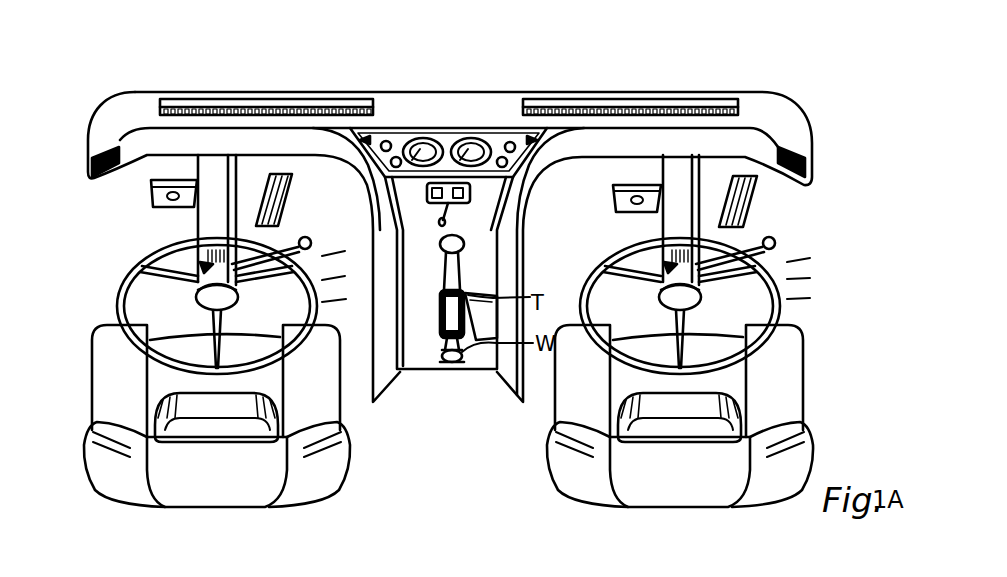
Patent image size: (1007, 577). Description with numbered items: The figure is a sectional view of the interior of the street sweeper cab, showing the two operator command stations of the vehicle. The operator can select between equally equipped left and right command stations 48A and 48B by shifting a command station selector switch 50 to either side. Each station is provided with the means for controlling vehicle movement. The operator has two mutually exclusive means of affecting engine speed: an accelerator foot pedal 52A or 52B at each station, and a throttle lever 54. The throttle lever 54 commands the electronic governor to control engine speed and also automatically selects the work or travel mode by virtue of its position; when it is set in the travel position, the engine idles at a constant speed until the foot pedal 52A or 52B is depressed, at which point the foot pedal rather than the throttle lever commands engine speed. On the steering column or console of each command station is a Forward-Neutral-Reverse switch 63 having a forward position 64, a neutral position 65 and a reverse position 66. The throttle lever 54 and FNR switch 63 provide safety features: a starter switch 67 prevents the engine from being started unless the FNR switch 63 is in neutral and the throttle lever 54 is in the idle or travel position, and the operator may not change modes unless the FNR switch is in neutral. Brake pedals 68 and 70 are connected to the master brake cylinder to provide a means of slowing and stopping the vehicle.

The left command station 48A is at (128, 243).
The right command station 48B is at (822, 177).
The command station selector switch 50 is at (450, 183).
The accelerator foot pedal 52A is at (281, 173).
The accelerator foot pedal 52B is at (758, 183).
The throttle lever 54 is at (463, 242).
The FNR switch 63 is at (305, 237).
The forward position 64 is at (365, 295).
The neutral position 65 is at (366, 270).
The reverse position 66 is at (366, 245).
The starter switch 67 is at (490, 376).
The brake pedal 68 is at (172, 205).
The brake pedal 70 is at (626, 212).